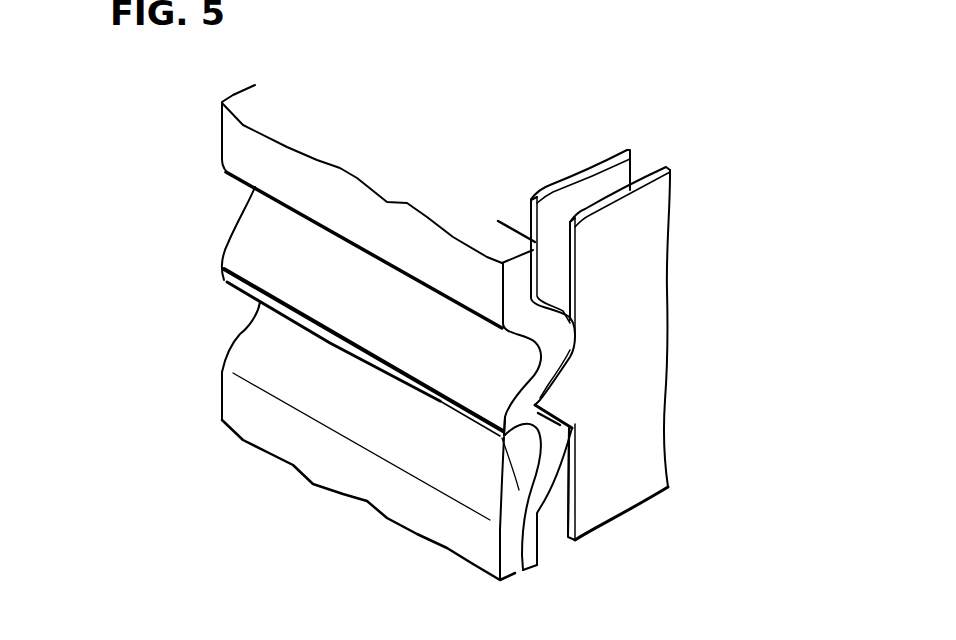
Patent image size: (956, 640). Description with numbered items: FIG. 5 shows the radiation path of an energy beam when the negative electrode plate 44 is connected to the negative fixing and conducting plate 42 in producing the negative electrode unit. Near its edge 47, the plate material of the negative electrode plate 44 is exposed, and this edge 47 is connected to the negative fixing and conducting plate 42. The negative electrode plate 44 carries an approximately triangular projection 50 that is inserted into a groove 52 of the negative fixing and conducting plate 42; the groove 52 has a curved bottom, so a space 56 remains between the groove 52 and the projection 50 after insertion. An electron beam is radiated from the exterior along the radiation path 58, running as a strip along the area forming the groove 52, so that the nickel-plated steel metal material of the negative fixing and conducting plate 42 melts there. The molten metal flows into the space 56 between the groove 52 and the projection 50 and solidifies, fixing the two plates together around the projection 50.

The negative fixing and conducting plate 42 is at (262, 150).
The negative electrode plate 44 is at (660, 197).
The edge 47 is at (562, 230).
The projection 50 is at (557, 398).
The groove 52 is at (520, 396).
The space 56 is at (557, 408).
The radiation path 58 is at (243, 278).